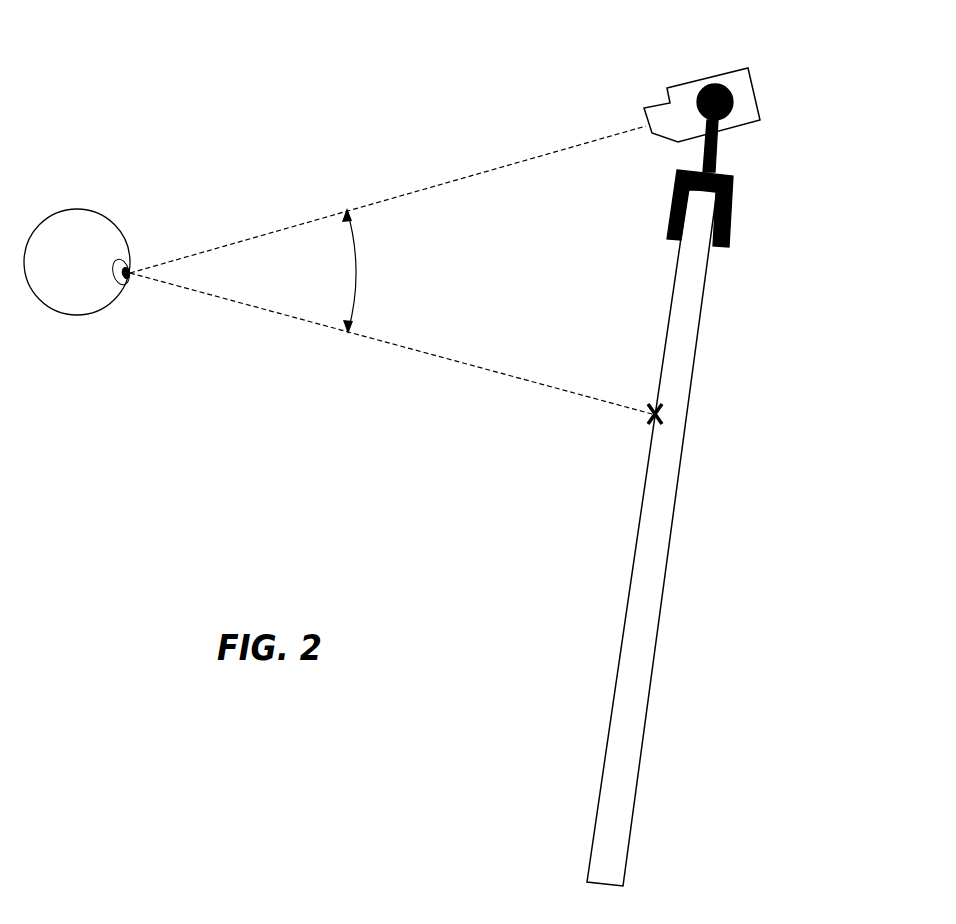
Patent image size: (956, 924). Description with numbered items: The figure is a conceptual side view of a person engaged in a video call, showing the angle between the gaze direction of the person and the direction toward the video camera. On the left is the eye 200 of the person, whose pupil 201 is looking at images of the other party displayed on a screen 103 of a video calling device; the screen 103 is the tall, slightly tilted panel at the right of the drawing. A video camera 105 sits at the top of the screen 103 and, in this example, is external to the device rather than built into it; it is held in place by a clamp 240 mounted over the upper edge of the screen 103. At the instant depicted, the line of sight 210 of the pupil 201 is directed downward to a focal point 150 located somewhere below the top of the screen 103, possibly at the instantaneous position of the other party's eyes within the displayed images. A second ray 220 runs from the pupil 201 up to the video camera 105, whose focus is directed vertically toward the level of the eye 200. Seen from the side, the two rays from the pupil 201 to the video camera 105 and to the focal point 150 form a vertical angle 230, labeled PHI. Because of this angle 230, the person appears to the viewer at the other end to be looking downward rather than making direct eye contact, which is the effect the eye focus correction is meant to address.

The screen 103 is at (608, 538).
The video camera 105 is at (654, 87).
The focal point 150 is at (589, 440).
The eye 200 is at (101, 237).
The pupil 201 is at (180, 311).
The line of sight 210 is at (391, 343).
The line of sight to camera 220 is at (388, 193).
The vertical angle 230 is at (406, 271).
The clamp 240 is at (752, 194).